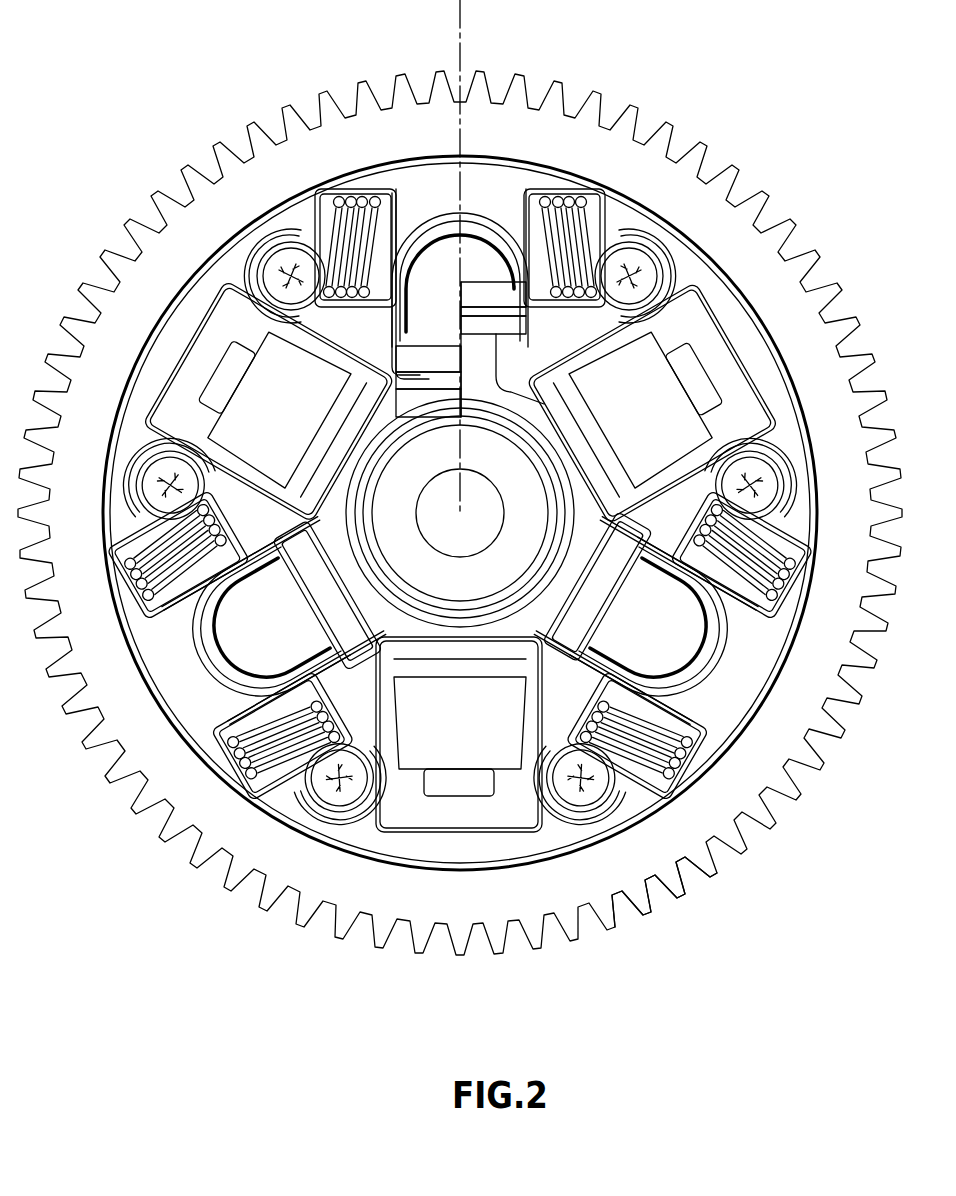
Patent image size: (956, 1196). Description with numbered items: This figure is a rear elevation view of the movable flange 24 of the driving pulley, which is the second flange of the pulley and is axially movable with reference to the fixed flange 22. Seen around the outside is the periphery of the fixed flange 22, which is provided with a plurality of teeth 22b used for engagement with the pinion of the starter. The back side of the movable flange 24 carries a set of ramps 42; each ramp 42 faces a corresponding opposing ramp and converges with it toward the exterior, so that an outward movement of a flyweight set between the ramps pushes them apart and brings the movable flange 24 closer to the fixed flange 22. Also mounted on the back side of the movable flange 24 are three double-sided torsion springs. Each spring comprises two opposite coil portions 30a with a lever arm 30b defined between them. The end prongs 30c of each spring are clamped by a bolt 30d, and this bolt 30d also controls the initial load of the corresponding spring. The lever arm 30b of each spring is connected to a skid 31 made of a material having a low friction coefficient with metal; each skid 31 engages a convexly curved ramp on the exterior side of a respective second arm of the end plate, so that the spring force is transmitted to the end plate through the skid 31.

The fixed flange 22 is at (203, 838).
The teeth 22b is at (657, 888).
The movable flange 24 is at (137, 268).
The coil portions 30a is at (585, 163).
The lever arm 30b is at (520, 214).
The end prongs 30c is at (648, 176).
The bolt 30d is at (221, 205).
The skid 31 is at (402, 209).
The ramps 42 is at (677, 299).